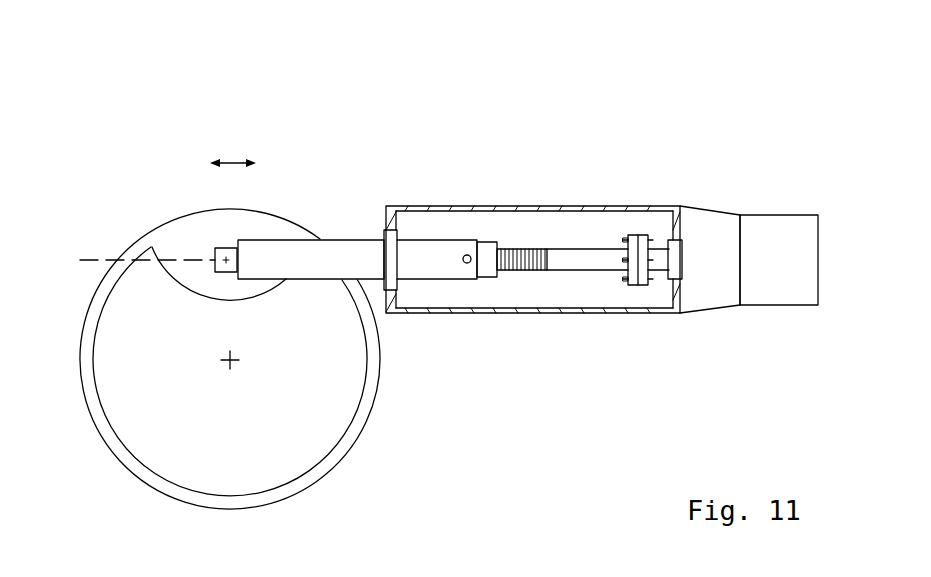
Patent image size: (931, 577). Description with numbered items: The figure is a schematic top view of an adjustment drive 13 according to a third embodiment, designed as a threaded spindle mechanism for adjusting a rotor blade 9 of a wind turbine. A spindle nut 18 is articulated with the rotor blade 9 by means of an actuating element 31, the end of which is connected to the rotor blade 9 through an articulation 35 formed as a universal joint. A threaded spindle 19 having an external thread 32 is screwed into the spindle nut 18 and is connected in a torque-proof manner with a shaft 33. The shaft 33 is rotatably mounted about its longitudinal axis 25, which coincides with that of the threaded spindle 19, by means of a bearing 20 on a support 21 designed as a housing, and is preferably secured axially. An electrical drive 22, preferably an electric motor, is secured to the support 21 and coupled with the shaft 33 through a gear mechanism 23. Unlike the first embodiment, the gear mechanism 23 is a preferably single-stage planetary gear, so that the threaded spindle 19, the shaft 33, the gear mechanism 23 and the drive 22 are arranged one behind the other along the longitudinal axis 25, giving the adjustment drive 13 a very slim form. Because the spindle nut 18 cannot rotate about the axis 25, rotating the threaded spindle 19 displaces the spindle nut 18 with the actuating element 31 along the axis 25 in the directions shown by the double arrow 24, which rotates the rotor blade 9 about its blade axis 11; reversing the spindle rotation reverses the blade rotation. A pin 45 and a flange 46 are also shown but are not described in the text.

The rotor blade 9 is at (328, 467).
The blade axis 11 is at (229, 362).
The adjustment drive 13 is at (308, 93).
The spindle nut 18 is at (489, 242).
The threaded spindle 19 is at (578, 272).
The bearing 20 is at (675, 240).
The support 21 is at (417, 205).
The electrical drive 22 is at (785, 218).
The gear mechanism 23 is at (703, 216).
The double arrow 24 is at (233, 160).
The longitudinal axis 25 is at (92, 258).
The actuating element 31 is at (358, 239).
The external thread 32 is at (518, 272).
The shaft 33 is at (657, 286).
The articulation 35 is at (220, 250).
The pin 45 is at (466, 254).
The flange 46 is at (395, 286).